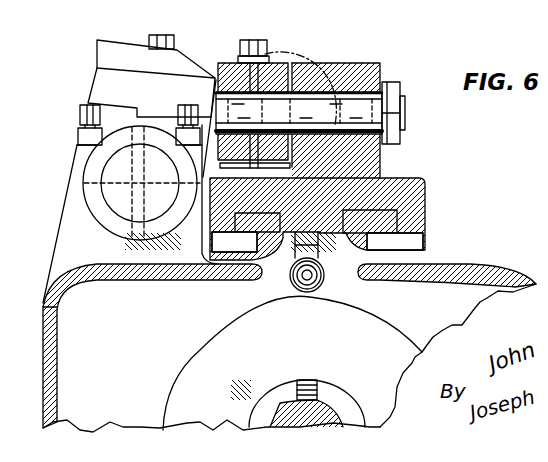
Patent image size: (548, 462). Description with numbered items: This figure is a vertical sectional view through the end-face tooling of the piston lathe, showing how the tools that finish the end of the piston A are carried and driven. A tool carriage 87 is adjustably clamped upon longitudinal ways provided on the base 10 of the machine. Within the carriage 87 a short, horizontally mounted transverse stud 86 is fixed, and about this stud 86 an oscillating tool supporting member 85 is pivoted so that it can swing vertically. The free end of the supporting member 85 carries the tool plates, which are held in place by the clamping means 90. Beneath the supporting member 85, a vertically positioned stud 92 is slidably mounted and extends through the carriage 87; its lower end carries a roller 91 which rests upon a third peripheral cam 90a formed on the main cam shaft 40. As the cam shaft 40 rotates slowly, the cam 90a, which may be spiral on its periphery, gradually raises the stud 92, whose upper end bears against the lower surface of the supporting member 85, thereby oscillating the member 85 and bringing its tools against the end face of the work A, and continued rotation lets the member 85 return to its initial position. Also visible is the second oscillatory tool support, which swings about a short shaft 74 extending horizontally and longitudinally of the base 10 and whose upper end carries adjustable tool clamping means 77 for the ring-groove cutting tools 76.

The adjustable tool clamping means 77 is at (103, 53).
The tools 76 is at (100, 77).
The short shaft 74 is at (118, 165).
The oscillating tool supporting member 85 is at (217, 80).
The clamping means 90 is at (277, 61).
The piston A is at (302, 47).
The transverse stud 86 is at (347, 100).
The tool carriage 87 is at (385, 182).
The base 10 is at (473, 262).
The roller 91 is at (292, 281).
The vertically positioned stud 92 is at (320, 236).
The third peripheral cam 90a is at (230, 362).
The main cam shaft 40 is at (273, 413).